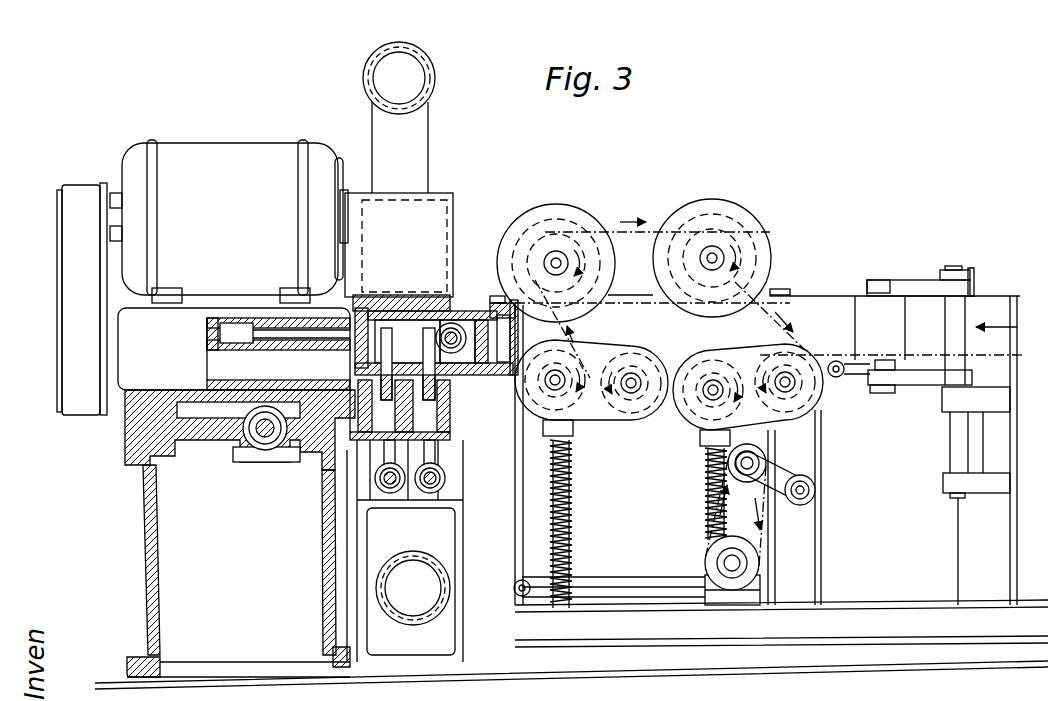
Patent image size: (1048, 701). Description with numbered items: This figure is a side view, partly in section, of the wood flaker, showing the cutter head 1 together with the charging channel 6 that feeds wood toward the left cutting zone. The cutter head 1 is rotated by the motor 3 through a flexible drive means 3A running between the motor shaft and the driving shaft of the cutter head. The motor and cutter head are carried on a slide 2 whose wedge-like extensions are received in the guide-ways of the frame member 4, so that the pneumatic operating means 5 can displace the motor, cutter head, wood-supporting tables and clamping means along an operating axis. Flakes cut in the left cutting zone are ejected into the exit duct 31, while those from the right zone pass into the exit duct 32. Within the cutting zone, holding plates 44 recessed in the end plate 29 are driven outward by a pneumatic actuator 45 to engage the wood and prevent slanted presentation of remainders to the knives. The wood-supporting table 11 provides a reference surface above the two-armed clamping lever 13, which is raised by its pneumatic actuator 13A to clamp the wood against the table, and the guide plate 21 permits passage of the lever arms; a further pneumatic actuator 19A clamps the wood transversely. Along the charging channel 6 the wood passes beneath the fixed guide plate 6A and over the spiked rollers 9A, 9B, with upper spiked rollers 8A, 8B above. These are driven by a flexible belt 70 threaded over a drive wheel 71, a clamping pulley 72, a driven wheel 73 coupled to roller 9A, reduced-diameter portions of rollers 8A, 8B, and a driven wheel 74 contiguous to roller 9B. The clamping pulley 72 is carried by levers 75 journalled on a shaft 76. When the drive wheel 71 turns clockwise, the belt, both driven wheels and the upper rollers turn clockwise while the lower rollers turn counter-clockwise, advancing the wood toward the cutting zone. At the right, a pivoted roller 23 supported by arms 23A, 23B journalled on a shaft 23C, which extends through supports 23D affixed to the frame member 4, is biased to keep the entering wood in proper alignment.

The cutter head 1 is at (427, 205).
The slide 2 is at (196, 400).
The motor 3 is at (137, 158).
The flexible drive means 3A is at (75, 268).
The frame member 4 is at (145, 497).
The pneumatic operating means 5 is at (265, 440).
The charging channel 6 is at (846, 287).
The fixed guide plate 6A is at (773, 290).
The spiked roller 8A is at (566, 228).
The spiked roller 8B is at (712, 225).
The spiked roller 9A is at (578, 395).
The spiked roller 9B is at (697, 400).
The wood-supporting table 11 is at (427, 300).
The two-armed clamping lever 13 is at (389, 372).
The pneumatic actuator 13A is at (438, 505).
The pneumatic actuator 19A is at (500, 303).
The guide plate 21 is at (427, 378).
The roller 23 is at (895, 308).
The arm 23A is at (924, 280).
The arm 23B is at (922, 377).
The shaft 23C is at (972, 268).
The supports 23D is at (985, 412).
The end plate 29 is at (352, 358).
The exit duct 31 is at (380, 83).
The exit duct 32 is at (425, 578).
The holding plates 44 is at (360, 297).
The pneumatic actuator 45 is at (238, 333).
The flexible belt 70 is at (795, 432).
The drive wheel 71 is at (752, 567).
The clamping pulley 72 is at (772, 452).
The driven wheel 73 is at (632, 356).
The driven wheel 74 is at (805, 393).
The levers 75 is at (808, 479).
The shaft 76 is at (808, 493).